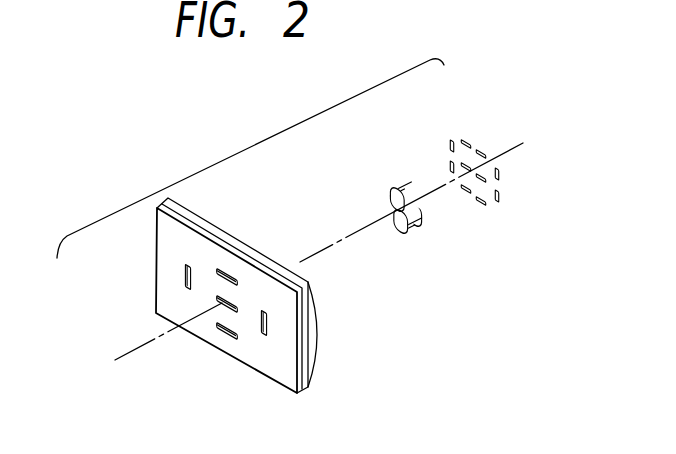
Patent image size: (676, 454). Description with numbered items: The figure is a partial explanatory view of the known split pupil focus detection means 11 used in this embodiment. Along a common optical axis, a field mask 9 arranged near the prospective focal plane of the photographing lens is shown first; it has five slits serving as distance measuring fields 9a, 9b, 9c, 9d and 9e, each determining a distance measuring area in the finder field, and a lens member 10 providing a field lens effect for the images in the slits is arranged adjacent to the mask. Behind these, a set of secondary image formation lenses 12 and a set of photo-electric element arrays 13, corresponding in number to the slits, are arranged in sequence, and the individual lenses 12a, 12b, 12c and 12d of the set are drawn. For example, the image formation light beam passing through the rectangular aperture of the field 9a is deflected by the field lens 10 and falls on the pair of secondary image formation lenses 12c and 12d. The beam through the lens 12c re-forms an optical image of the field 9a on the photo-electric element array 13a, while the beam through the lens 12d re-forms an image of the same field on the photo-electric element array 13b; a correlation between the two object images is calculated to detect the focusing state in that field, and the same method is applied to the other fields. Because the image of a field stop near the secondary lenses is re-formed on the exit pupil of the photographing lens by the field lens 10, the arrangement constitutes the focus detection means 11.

The field mask 9 is at (232, 293).
The distance measuring field 9a is at (216, 271).
The distance measuring field 9b is at (216, 300).
The distance measuring field 9c is at (224, 339).
The distance measuring field 9d is at (184, 274).
The distance measuring field 9e is at (262, 330).
The lens member 10 is at (318, 370).
The focus detection means 11 is at (272, 135).
The secondary image formation lenses 12 is at (388, 209).
The plug upper portion 12a is at (408, 182).
The plug lower lobe 12b is at (400, 229).
The secondary image formation lens 12c is at (385, 190).
The secondary image formation lens 12d is at (417, 222).
The photo-electric element arrays 13 is at (501, 221).
The photo-electric element array 13a is at (466, 196).
The photo-electric element array 13b is at (482, 208).